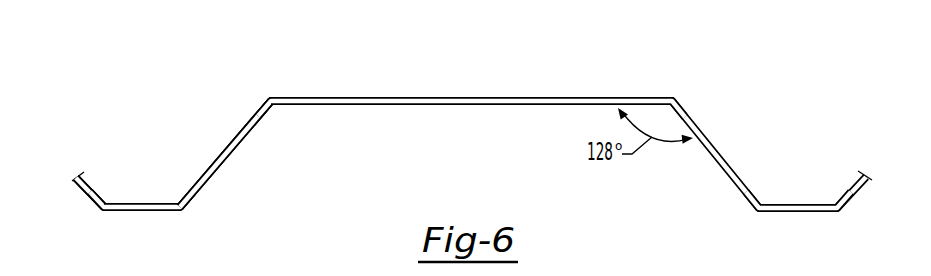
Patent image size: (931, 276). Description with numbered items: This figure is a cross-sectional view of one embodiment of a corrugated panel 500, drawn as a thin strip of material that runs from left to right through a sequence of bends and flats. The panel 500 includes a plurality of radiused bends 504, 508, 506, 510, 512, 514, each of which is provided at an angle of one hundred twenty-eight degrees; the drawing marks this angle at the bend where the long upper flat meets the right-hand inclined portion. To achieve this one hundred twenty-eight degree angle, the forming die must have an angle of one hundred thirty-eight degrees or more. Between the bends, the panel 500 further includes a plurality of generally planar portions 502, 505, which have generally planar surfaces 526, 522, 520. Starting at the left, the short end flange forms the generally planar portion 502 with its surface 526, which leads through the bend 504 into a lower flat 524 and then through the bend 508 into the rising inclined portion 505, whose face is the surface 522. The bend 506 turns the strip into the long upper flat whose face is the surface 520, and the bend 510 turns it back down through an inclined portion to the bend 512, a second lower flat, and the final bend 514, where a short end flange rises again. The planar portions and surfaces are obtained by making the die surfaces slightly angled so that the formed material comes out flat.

The panel 500 is at (214, 84).
The generally planar portion 502 is at (82, 176).
The radiused bend 504 is at (105, 211).
The generally planar portion 505 is at (240, 147).
The radiused bend 506 is at (270, 97).
The radiused bend 508 is at (182, 211).
The radiused bend 510 is at (674, 97).
The radiused bend 512 is at (760, 212).
The radiused bend 514 is at (838, 212).
The generally planar surface 520 is at (449, 93).
The generally planar surface 522 is at (216, 148).
The bottom flat section 524 is at (144, 196).
The generally planar surface 526 is at (82, 202).